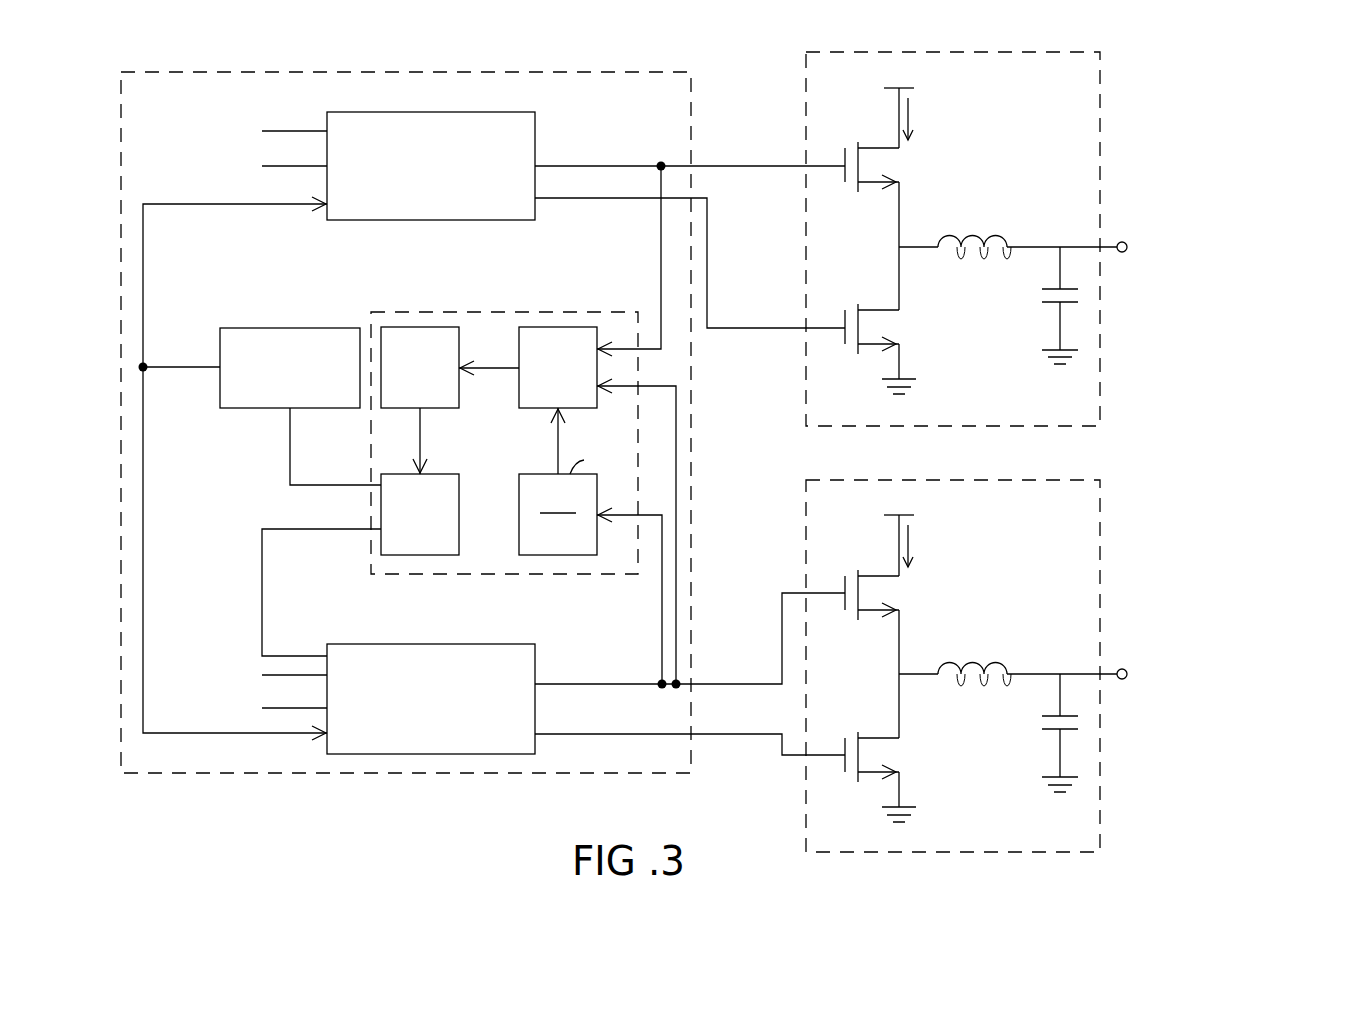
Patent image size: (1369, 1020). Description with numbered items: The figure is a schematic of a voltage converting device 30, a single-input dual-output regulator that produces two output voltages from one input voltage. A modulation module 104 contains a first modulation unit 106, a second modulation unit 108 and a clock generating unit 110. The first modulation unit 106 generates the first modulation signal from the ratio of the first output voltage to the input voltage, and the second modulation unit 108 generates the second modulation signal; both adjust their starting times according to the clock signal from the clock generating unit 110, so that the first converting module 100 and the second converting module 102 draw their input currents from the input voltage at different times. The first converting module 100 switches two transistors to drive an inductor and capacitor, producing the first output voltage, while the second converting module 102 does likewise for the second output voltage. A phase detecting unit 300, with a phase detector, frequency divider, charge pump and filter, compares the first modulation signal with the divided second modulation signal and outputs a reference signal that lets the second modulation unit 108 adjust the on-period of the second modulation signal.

The voltage converting device 30 is at (1242, 112).
The converting module 100 is at (1078, 52).
The converting module 102 is at (1078, 480).
The modulation module 104 is at (636, 72).
The modulation unit 106 is at (517, 112).
The modulation unit 108 is at (517, 644).
The clock generating unit 110 is at (280, 328).
The phase detecting unit 300 is at (573, 312).